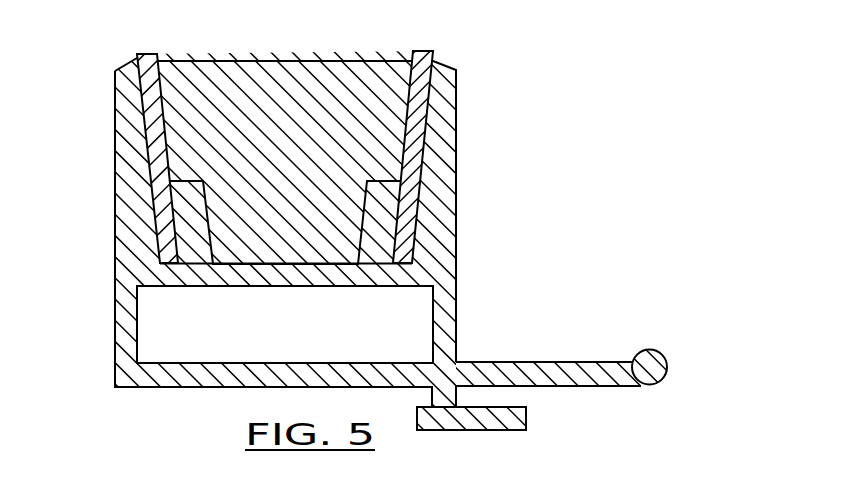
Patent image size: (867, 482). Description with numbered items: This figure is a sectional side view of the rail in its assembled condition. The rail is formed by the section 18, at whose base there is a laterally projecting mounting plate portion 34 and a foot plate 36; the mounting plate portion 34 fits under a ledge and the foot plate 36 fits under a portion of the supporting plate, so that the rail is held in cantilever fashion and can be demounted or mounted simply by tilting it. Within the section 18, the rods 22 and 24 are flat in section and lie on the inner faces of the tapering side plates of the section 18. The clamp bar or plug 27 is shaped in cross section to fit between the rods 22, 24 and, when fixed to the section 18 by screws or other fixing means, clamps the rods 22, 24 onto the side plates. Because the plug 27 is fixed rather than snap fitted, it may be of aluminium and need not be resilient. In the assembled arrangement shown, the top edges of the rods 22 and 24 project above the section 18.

The section 18 is at (440, 219).
The rod 22 is at (150, 118).
The rod 24 is at (420, 107).
The clamp bar or plug 27 is at (207, 102).
The mounting plate portion 34 is at (592, 374).
The foot plate 36 is at (517, 416).